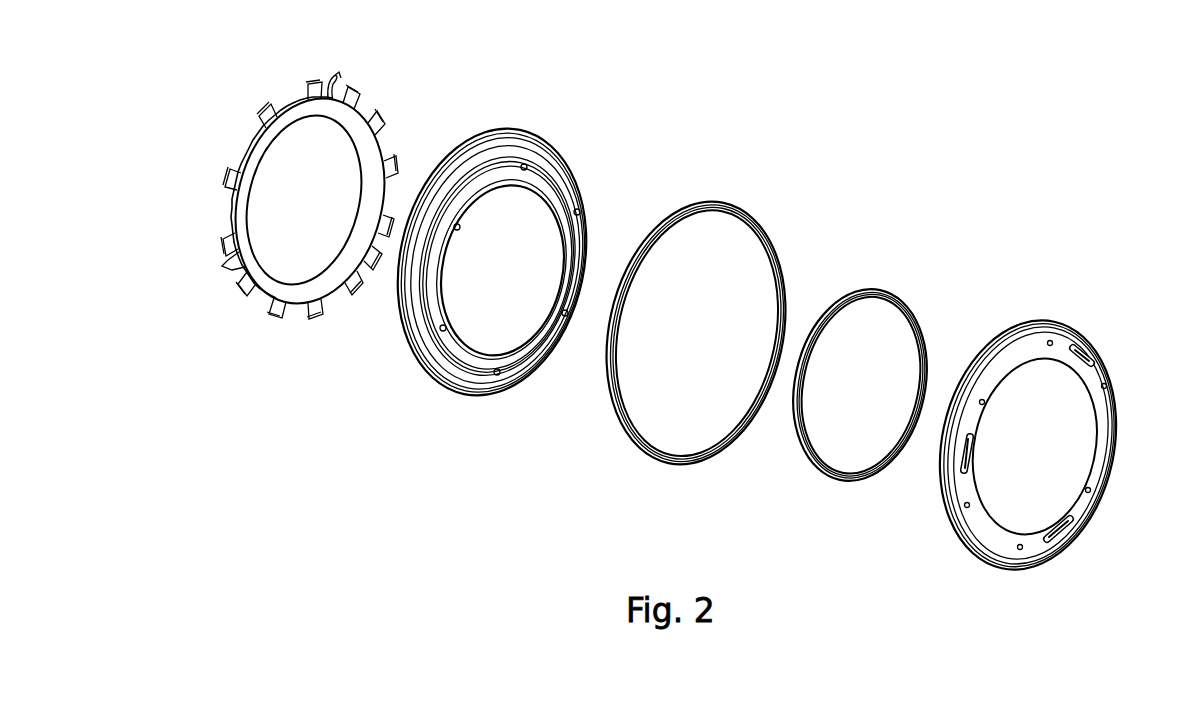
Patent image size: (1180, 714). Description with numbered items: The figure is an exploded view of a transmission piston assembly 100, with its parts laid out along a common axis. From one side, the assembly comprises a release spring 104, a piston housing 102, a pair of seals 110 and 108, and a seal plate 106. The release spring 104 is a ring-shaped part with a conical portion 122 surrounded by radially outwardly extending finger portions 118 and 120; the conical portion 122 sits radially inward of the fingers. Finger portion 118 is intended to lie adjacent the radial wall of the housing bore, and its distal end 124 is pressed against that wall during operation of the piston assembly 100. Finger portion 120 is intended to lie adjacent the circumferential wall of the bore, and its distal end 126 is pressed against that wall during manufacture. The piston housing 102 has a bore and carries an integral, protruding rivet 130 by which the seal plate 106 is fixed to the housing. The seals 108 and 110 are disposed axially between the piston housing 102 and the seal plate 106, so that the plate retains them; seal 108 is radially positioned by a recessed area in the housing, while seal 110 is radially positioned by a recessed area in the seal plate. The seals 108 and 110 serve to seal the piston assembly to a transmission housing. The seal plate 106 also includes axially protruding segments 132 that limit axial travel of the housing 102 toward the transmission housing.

The transmission piston assembly 100 is at (822, 104).
The piston housing 102 is at (497, 133).
The release spring 104 is at (357, 103).
The seal plate 106 is at (1053, 322).
The seal 108 is at (883, 292).
The seal 110 is at (729, 205).
The finger portion 118 is at (283, 312).
The finger portion 120 is at (230, 258).
The conical portion 122 is at (266, 282).
The distal end 124 is at (278, 322).
The distal end 126 is at (222, 272).
The rivet 130 is at (528, 164).
The axially protruding segments 132 is at (1073, 534).